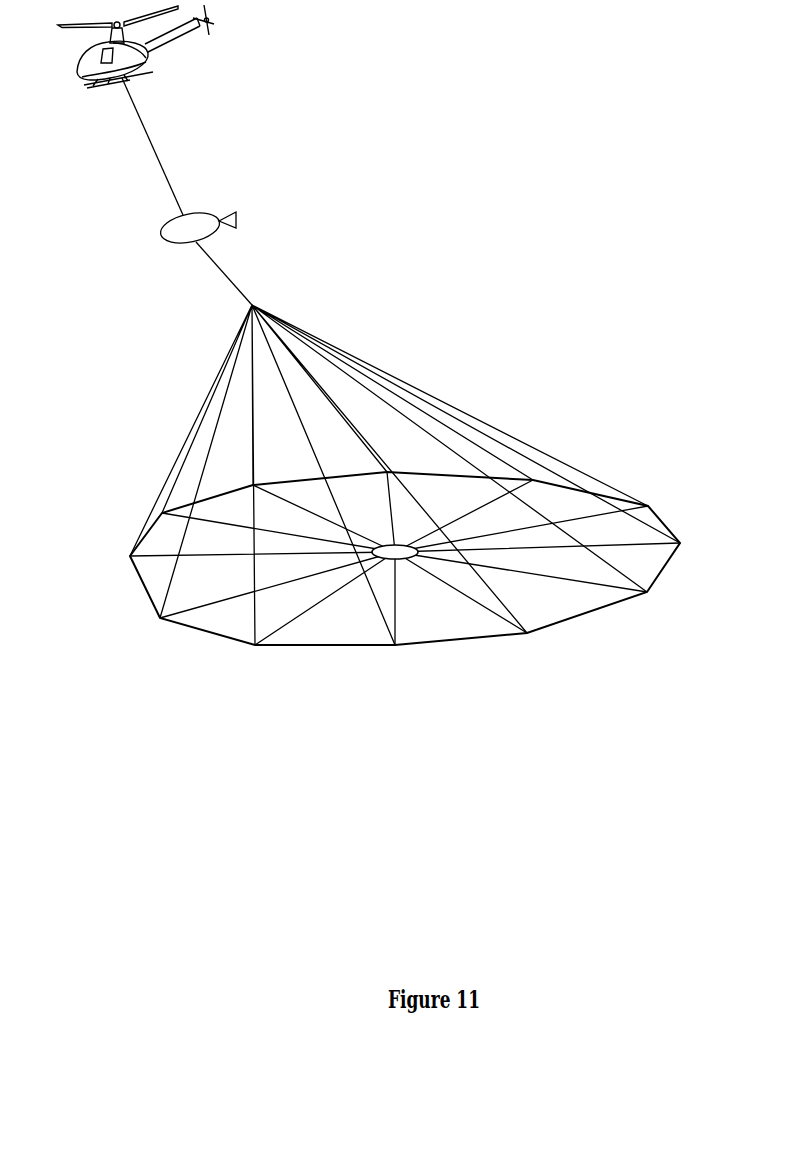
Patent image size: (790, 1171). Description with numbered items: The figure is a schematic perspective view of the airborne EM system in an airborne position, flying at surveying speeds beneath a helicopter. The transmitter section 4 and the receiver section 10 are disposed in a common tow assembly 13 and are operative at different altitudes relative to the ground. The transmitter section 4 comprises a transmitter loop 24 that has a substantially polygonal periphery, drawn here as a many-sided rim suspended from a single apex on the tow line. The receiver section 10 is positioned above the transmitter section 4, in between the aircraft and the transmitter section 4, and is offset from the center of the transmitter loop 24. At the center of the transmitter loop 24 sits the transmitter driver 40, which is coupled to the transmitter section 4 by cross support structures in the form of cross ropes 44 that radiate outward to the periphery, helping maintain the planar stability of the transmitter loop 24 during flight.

The transmitter section 4 is at (398, 492).
The receiver section 10 is at (245, 203).
The tow assembly 13 is at (83, 173).
The transmitter loop 24 is at (190, 640).
The transmitter driver 40 is at (406, 563).
The cross ropes 44 is at (322, 607).